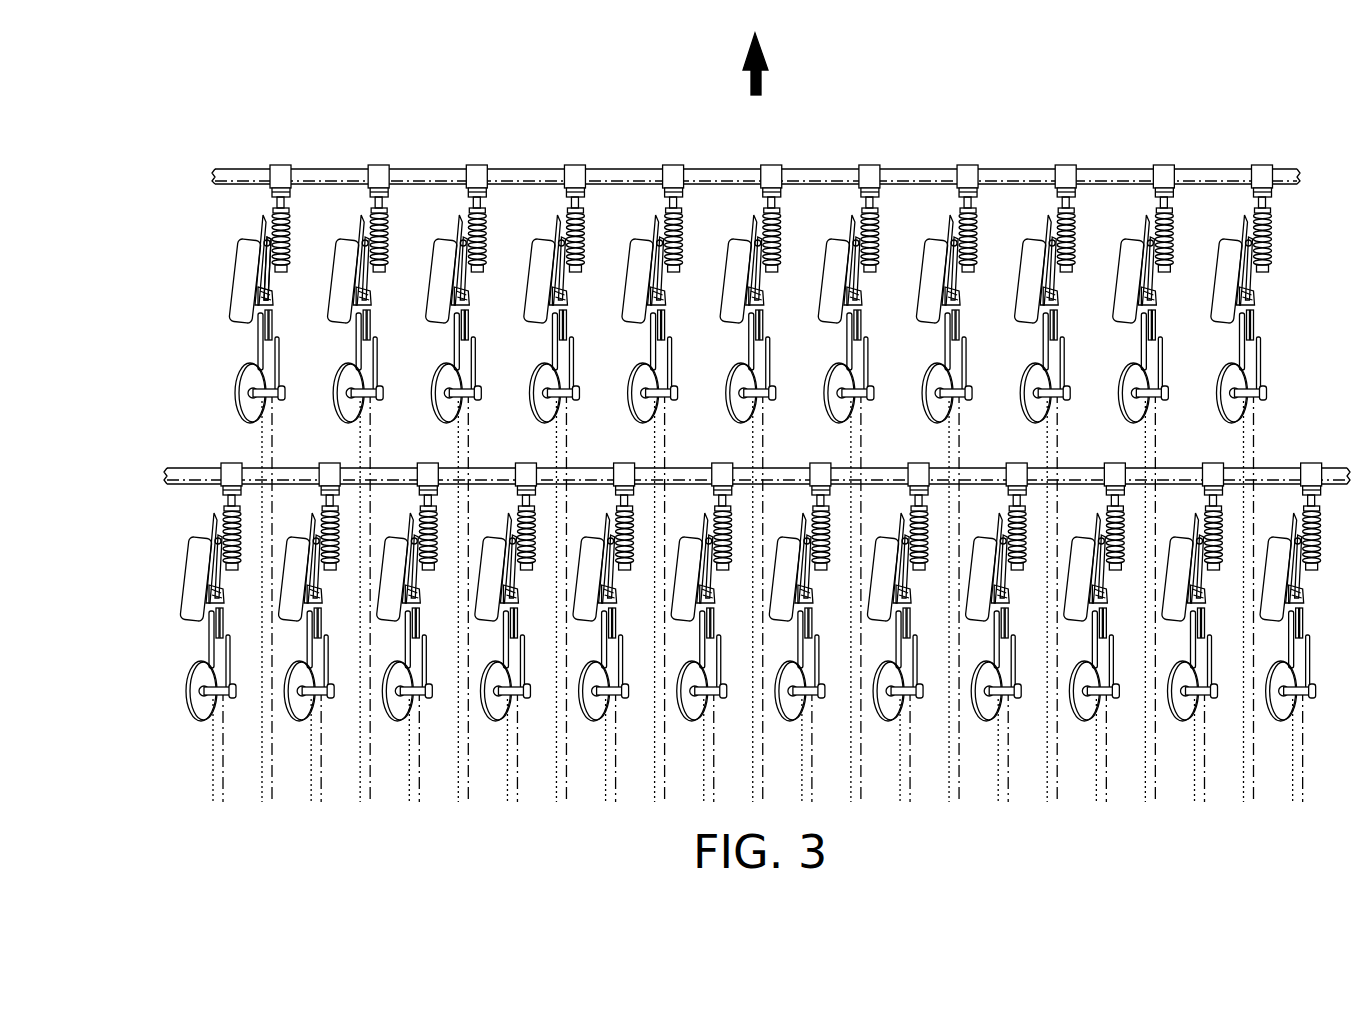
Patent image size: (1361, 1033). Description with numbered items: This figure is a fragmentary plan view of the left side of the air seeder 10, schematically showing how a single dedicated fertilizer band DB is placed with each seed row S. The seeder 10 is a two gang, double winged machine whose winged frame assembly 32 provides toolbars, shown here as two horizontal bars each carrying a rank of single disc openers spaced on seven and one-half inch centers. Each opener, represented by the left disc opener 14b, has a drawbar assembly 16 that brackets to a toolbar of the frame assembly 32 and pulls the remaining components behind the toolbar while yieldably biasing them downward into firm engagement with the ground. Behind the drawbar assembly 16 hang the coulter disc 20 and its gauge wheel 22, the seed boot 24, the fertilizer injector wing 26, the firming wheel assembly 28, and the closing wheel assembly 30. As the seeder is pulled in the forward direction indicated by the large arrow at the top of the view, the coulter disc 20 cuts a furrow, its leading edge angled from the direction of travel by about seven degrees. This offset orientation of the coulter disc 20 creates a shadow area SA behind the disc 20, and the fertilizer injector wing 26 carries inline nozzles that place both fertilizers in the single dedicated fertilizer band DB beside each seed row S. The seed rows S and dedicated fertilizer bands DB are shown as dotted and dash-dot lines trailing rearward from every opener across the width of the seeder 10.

The air seeder 10 is at (158, 131).
The left disc opener 14b is at (198, 318).
The drawbar assembly 16 is at (260, 165).
The frame assembly 32 is at (307, 173).
The coulter disc 20 is at (261, 222).
The gauge wheel 22 is at (242, 260).
The seed boot 24 is at (253, 283).
The fertilizer injector wing 26 is at (270, 303).
The firming wheel assembly 28 is at (257, 335).
The closing wheel assembly 30 is at (237, 397).
The shadow area SA is at (276, 287).
The seed row S is at (260, 783).
The dedicated fertilizer band DB is at (272, 783).